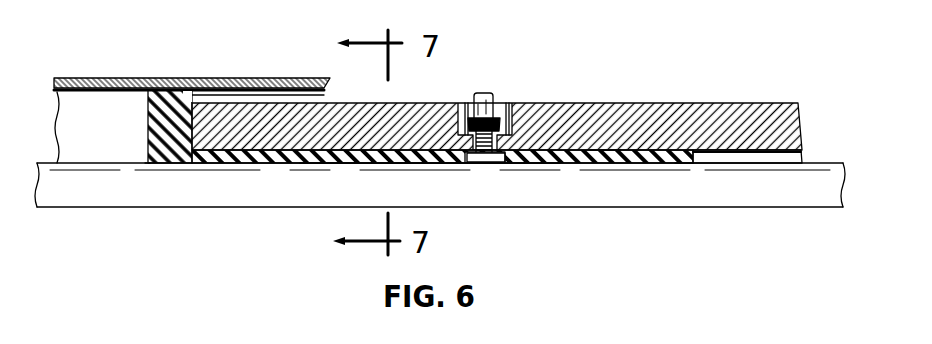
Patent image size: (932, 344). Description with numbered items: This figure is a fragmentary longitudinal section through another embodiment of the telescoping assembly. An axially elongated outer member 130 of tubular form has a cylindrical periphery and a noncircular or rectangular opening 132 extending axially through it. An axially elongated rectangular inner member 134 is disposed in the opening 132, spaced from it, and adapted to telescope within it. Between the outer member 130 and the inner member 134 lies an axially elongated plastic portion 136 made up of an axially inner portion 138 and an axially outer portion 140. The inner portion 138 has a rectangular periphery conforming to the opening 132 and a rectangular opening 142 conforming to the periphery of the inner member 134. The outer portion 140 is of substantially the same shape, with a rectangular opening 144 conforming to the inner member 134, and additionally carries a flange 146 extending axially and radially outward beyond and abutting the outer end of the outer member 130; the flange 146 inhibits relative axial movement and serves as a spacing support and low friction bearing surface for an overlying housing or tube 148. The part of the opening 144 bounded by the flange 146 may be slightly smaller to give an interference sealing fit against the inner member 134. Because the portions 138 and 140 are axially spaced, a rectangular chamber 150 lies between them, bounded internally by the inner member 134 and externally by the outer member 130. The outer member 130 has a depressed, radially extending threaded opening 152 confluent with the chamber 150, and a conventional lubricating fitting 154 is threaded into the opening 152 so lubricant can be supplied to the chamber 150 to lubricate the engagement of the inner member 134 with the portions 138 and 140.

The outer member 130 is at (697, 112).
The opening 132 is at (800, 158).
The inner member 134 is at (828, 190).
The plastic portion 136 is at (430, 170).
The inner portion 138 is at (605, 148).
The outer portion 140 is at (388, 152).
The opening 142 is at (672, 164).
The opening 144 is at (147, 166).
The flange 146 is at (150, 121).
The housing or tube 148 is at (102, 85).
The chamber 150 is at (488, 162).
The threaded opening 152 is at (502, 141).
The lubricating fitting 154 is at (489, 99).